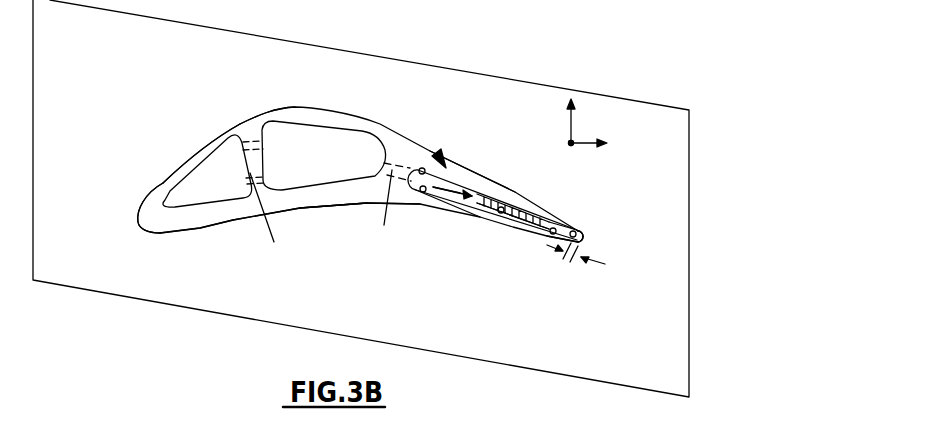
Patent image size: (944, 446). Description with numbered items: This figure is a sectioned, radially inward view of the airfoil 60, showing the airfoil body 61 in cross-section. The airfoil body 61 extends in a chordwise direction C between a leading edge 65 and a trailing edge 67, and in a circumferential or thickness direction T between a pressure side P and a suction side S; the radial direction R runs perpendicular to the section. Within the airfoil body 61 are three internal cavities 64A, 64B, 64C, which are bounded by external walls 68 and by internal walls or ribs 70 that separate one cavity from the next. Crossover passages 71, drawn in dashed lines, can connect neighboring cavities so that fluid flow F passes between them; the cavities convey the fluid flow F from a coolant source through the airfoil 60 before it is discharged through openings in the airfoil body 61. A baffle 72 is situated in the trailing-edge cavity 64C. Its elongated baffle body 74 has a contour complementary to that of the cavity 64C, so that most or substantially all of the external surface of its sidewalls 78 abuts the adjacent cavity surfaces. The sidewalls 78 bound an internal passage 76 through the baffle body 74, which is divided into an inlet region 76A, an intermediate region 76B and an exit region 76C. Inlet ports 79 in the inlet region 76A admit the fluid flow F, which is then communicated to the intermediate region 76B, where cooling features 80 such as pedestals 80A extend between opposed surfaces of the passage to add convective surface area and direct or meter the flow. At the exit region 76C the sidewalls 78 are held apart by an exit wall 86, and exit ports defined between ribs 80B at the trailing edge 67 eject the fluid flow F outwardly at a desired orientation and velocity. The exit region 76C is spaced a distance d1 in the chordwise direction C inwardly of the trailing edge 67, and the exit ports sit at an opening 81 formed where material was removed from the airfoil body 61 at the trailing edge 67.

The airfoil 60 is at (139, 90).
The airfoil body 61 is at (188, 216).
The internal cavity 64A is at (186, 163).
The internal cavity 64B is at (290, 127).
The internal cavity 64C is at (443, 172).
The leading edge 65 is at (136, 216).
The trailing edge 67 is at (582, 242).
The external walls 68 is at (310, 113).
The internal walls or ribs 70 is at (248, 133).
The crossover passages 71 is at (274, 242).
The baffle 72 is at (436, 165).
The baffle body 74 is at (467, 188).
The internal passage 76 is at (439, 152).
The inlet region 76A is at (423, 192).
The intermediate region 76B is at (501, 213).
The exit region 76C is at (570, 237).
The sidewalls 78 is at (556, 226).
The inlet ports 79 is at (415, 190).
The cooling features 80 is at (500, 196).
The pedestals 80A is at (510, 218).
The ribs 80B is at (580, 226).
The opening 81 is at (580, 234).
The exit wall 86 is at (580, 236).
The suction side S is at (333, 111).
The pressure side P is at (340, 206).
The fluid flow F is at (440, 190).
The distance d1 is at (595, 265).
The thickness direction T is at (578, 118).
The chordwise direction C is at (600, 143).
The radial direction R is at (571, 143).